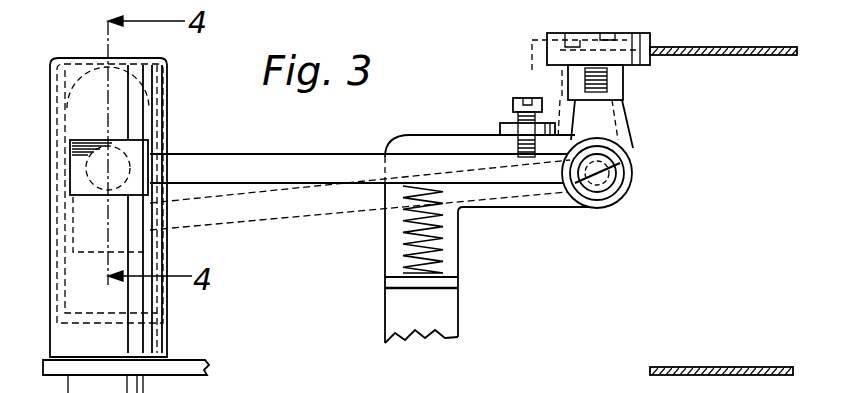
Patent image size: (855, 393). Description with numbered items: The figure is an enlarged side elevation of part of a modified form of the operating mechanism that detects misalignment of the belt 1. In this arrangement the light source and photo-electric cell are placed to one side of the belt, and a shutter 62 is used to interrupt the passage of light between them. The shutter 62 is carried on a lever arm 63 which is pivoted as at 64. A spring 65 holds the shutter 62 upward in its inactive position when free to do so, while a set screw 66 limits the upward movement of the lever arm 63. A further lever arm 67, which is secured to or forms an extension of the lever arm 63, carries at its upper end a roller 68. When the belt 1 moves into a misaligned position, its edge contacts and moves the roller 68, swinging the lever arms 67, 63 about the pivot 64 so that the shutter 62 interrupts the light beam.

The belt 1 is at (697, 46).
The shutter 62 is at (135, 147).
The lever arm 63 is at (277, 163).
The pivot 64 is at (612, 178).
The spring 65 is at (443, 240).
The set screw 66 is at (513, 106).
The lever arm 67 is at (558, 80).
The roller 68 is at (554, 40).